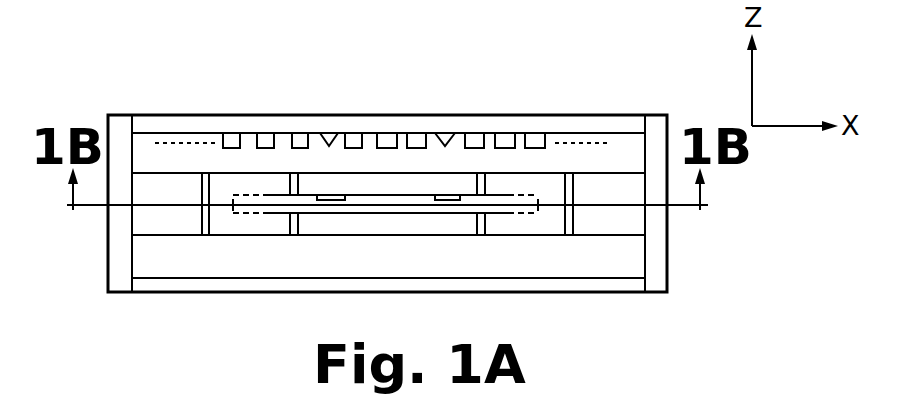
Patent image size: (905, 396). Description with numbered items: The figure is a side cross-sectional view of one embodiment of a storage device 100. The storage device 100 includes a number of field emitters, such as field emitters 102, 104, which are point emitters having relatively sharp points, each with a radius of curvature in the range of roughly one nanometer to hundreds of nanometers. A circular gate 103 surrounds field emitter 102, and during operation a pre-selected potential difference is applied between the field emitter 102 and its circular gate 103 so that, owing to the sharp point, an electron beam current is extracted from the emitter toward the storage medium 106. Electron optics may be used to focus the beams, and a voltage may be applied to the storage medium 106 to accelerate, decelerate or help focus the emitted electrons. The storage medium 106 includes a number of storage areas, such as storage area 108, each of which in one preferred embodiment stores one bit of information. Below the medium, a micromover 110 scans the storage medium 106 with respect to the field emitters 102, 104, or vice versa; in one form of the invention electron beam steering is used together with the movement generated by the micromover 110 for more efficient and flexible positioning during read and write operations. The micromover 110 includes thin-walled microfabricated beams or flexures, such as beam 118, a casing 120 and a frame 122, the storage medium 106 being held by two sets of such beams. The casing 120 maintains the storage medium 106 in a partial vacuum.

The storage device 100 is at (136, 63).
The field emitter 102 is at (331, 133).
The circular gate 103 is at (310, 134).
The field emitter 104 is at (446, 134).
The storage medium 106 is at (237, 214).
The storage area 108 is at (322, 196).
The micromover 110 is at (158, 243).
The beam 118 is at (609, 204).
The casing 120 is at (655, 263).
The frame 122 is at (565, 183).